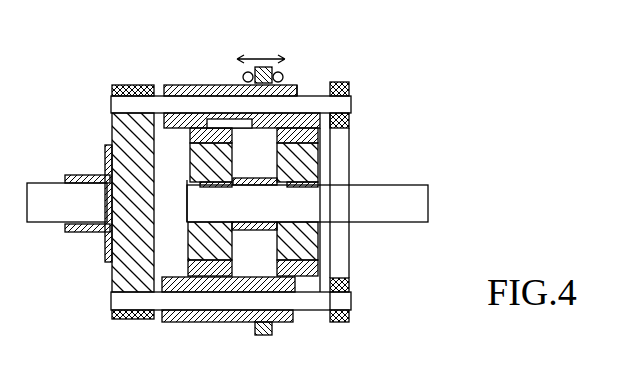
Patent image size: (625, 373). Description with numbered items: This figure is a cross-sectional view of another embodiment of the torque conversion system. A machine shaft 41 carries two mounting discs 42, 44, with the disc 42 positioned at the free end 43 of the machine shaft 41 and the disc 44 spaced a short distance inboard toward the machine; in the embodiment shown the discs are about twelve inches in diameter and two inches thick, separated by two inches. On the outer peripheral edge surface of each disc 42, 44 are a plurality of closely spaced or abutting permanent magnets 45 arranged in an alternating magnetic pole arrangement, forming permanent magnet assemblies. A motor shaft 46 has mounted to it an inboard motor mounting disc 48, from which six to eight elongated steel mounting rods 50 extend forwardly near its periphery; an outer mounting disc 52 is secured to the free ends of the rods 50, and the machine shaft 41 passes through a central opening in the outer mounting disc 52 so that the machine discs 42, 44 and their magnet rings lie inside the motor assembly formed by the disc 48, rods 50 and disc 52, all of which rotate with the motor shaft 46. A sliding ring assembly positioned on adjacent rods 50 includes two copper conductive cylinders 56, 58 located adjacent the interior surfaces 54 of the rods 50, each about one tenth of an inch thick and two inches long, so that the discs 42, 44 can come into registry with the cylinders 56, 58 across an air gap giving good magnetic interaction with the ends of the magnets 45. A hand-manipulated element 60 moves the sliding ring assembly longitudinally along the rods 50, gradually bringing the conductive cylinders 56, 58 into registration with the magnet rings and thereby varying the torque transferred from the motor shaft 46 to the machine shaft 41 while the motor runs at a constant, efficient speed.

The machine shaft 41 is at (416, 216).
The mounting disc 42 is at (254, 191).
The free end 43 is at (187, 208).
The mounting disc 44 is at (318, 160).
The permanent magnets 45 is at (233, 138).
The motor shaft 46 is at (50, 222).
The inboard motor mounting disc 48 is at (117, 160).
The mounting rods 50 is at (314, 103).
The outer mounting disc 52 is at (351, 86).
The interior surfaces 54 is at (208, 130).
The conductive cylinder 56 is at (182, 127).
The conductive cylinder 58 is at (283, 122).
The hand-manipulated element 60 is at (267, 64).